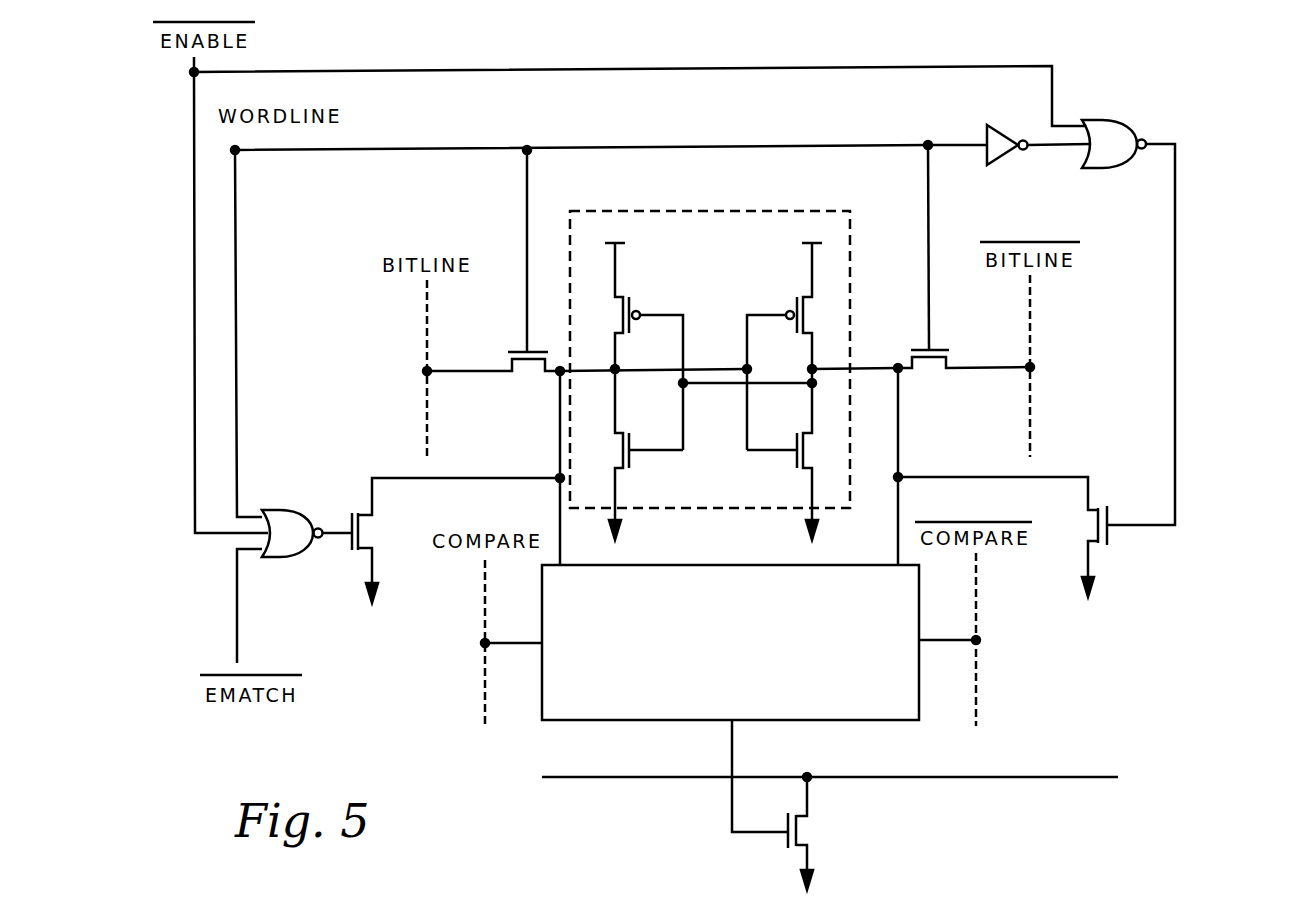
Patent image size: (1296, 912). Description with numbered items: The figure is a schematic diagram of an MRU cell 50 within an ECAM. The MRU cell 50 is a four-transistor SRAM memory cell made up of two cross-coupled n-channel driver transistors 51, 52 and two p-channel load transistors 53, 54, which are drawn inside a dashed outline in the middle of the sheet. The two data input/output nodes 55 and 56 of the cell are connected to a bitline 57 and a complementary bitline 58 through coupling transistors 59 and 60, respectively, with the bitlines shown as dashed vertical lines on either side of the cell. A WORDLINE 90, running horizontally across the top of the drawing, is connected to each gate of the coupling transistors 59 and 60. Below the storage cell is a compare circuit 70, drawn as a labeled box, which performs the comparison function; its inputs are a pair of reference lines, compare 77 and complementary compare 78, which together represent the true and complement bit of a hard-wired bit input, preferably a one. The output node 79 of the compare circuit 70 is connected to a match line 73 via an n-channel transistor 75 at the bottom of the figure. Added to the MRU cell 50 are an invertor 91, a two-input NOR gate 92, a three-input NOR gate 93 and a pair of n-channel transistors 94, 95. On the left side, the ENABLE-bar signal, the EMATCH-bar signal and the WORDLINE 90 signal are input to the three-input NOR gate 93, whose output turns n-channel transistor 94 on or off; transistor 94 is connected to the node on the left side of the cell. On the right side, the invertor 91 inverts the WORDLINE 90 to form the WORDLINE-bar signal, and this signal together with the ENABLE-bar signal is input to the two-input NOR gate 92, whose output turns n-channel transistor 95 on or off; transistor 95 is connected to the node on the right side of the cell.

The MRU cell 50 is at (767, 203).
The n-channel driver transistor 51 is at (644, 466).
The n-channel driver transistor 52 is at (788, 466).
The p-channel load transistor 53 is at (641, 300).
The p-channel load transistor 54 is at (785, 300).
The data input/output node 55 is at (606, 356).
The data input/output node 56 is at (887, 354).
The bitline 57 is at (425, 352).
The complementary bitline 58 is at (1032, 350).
The coupling transistor 59 is at (527, 377).
The coupling transistor 60 is at (928, 370).
The compare circuit 70 is at (908, 602).
The match line 73 is at (1010, 775).
The n-channel transistor 75 is at (806, 835).
The compare line 77 is at (483, 625).
The complementary compare line 78 is at (978, 630).
The output node 79 is at (734, 758).
The WORDLINE 90 is at (387, 148).
The invertor 91 is at (995, 126).
The two-input NOR gate 92 is at (1100, 121).
The three-input NOR gate 93 is at (283, 510).
The n-channel transistor 94 is at (370, 531).
The n-channel transistor 95 is at (1090, 523).